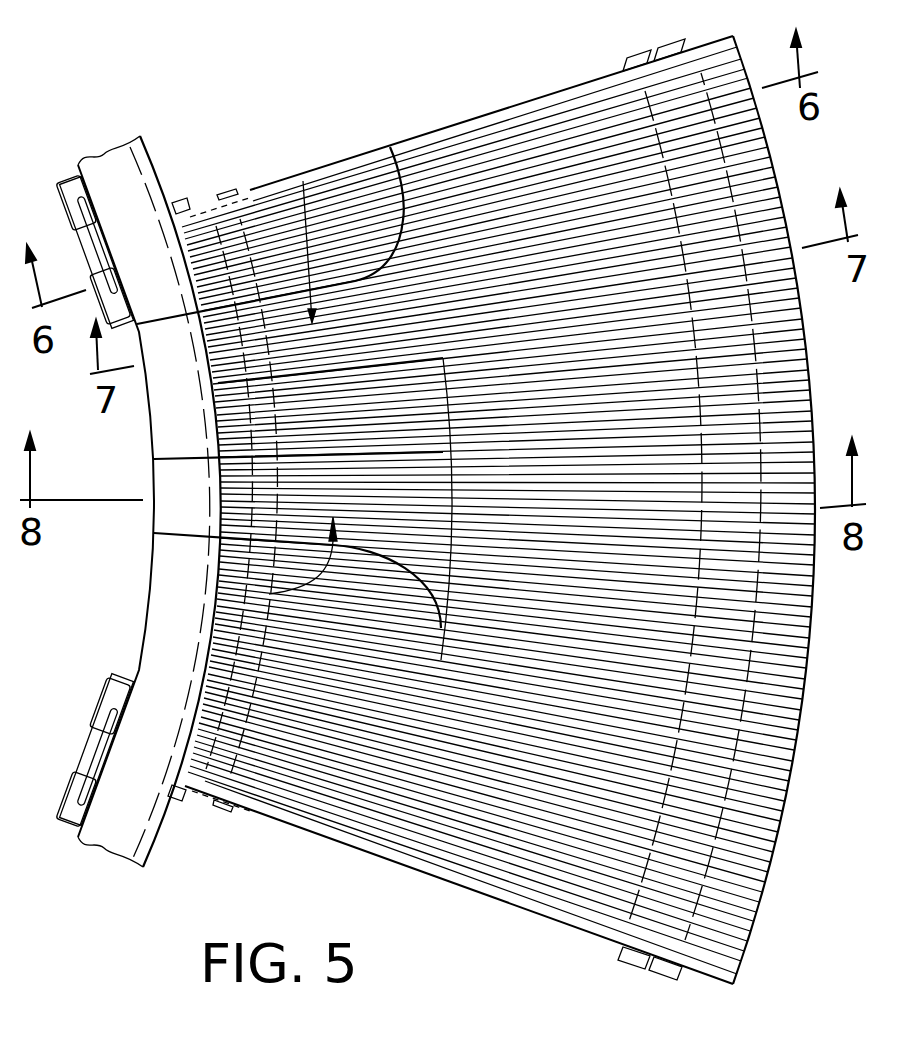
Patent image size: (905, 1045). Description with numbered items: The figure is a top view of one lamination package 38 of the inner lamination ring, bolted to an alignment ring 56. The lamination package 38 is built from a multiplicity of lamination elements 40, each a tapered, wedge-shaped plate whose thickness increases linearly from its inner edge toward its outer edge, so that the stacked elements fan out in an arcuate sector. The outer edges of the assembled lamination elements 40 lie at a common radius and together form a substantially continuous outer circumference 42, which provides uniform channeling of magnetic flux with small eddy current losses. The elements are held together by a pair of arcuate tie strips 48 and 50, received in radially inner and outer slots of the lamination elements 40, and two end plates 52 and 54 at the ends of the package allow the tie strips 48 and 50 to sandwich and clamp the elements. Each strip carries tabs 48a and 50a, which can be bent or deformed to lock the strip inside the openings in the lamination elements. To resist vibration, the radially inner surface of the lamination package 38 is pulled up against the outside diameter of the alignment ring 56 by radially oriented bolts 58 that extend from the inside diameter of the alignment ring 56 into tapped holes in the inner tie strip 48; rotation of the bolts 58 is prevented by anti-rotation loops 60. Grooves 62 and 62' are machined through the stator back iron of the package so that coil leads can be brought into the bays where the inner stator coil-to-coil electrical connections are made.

The lamination package 38 is at (405, 103).
The lamination element 40 is at (578, 110).
The outer circumference 42 is at (800, 764).
The tie strip 48 is at (213, 664).
The tabs 48a is at (193, 208).
The tie strip 50 is at (690, 868).
The tabs 50a is at (637, 47).
The end plate 52 is at (336, 165).
The end plate 54 is at (500, 905).
The alignment ring 56 is at (153, 566).
The bolts 58 is at (57, 193).
The anti-rotation loops 60 is at (107, 240).
The groove 62 is at (270, 235).
The groove 62' is at (303, 509).